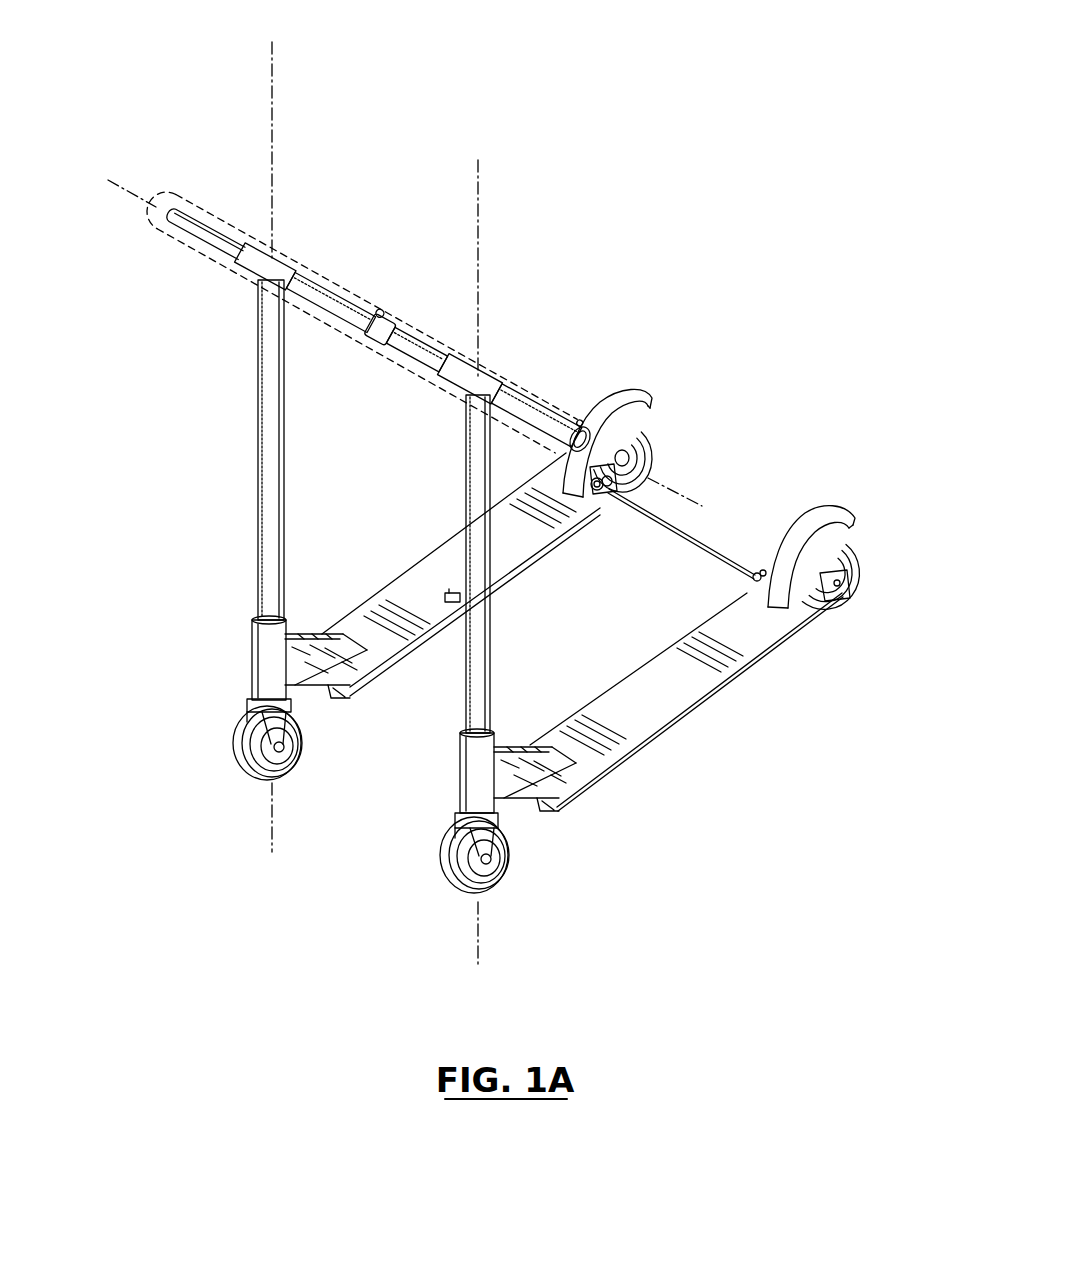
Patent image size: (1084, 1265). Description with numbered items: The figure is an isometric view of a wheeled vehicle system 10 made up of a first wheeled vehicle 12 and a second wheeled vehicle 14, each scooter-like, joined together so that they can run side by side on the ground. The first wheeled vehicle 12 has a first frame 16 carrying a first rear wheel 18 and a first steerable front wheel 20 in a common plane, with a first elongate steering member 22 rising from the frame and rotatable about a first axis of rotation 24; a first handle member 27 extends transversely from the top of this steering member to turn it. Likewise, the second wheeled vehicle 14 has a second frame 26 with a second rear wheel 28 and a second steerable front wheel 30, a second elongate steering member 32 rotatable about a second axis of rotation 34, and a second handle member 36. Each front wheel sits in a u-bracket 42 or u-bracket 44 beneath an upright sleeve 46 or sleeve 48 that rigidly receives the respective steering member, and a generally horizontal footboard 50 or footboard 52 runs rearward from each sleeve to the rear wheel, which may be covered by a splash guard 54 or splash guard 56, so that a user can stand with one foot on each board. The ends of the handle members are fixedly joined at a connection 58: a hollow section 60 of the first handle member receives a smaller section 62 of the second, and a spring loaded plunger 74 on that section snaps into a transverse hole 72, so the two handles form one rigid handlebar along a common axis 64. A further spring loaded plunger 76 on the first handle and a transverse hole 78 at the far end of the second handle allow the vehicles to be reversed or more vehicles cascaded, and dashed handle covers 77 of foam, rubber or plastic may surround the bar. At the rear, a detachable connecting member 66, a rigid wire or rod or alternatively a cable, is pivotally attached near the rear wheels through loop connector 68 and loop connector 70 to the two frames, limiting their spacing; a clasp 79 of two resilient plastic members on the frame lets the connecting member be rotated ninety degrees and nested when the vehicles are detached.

The wheeled vehicle system 10 is at (751, 164).
The first wheeled vehicle 12 is at (177, 426).
The second wheeled vehicle 14 is at (764, 700).
The first frame 16 is at (398, 564).
The first rear wheel 18 is at (660, 422).
The first steerable front wheel 20 is at (236, 743).
The first elongate steering member 22 is at (263, 487).
The first axis of rotation 24 is at (271, 449).
The second frame 26 is at (653, 750).
The first handle member 27 is at (205, 236).
The second rear wheel 28 is at (862, 553).
The second steerable front wheel 30 is at (446, 855).
The second elongate steering member 32 is at (466, 690).
The second axis of rotation 34 is at (478, 563).
The second handle member 36 is at (557, 402).
The u-bracket 42 is at (250, 710).
The u-bracket 44 is at (455, 832).
The sleeve 46 is at (254, 656).
The upright sleeve 48 is at (458, 780).
The footboard 50 is at (520, 558).
The footboard 52 is at (660, 663).
The splash guard 54 is at (628, 392).
The splash guard 56 is at (836, 508).
The connection 58 is at (382, 288).
The section 60 is at (330, 278).
The section 62 is at (425, 327).
The common axis 64 is at (399, 336).
The detachable rear connecting member 66 is at (755, 560).
The loop connector 68 is at (601, 498).
The loop connector 70 is at (752, 580).
The transverse hole 72 is at (380, 333).
The spring loaded plunger 74 is at (376, 315).
The spring loaded plunger 76 is at (171, 208).
The handle covers 77 is at (220, 213).
The transverse hole 78 is at (578, 428).
The clasp 79 is at (449, 591).